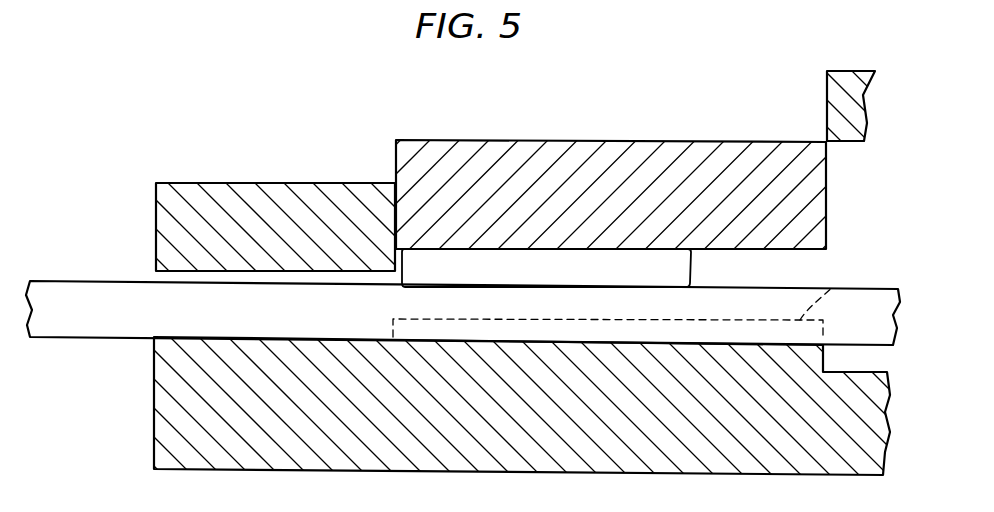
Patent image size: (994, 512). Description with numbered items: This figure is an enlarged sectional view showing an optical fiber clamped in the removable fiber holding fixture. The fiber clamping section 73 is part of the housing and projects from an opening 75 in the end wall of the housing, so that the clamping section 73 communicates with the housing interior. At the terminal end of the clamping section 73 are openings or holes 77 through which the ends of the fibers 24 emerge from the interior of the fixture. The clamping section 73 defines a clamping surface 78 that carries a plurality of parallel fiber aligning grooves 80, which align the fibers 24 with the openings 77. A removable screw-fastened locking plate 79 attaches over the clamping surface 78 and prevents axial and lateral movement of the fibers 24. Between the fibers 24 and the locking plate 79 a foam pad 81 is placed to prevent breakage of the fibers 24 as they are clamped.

The fibers 24 is at (88, 339).
The fiber clamping section 73 is at (154, 446).
The opening 75 is at (862, 195).
The openings or holes 77 is at (163, 274).
The clamping surface 78 is at (833, 287).
The locking plate 79 is at (574, 141).
The fiber aligning grooves 80 is at (812, 334).
The foam pad 81 is at (688, 275).